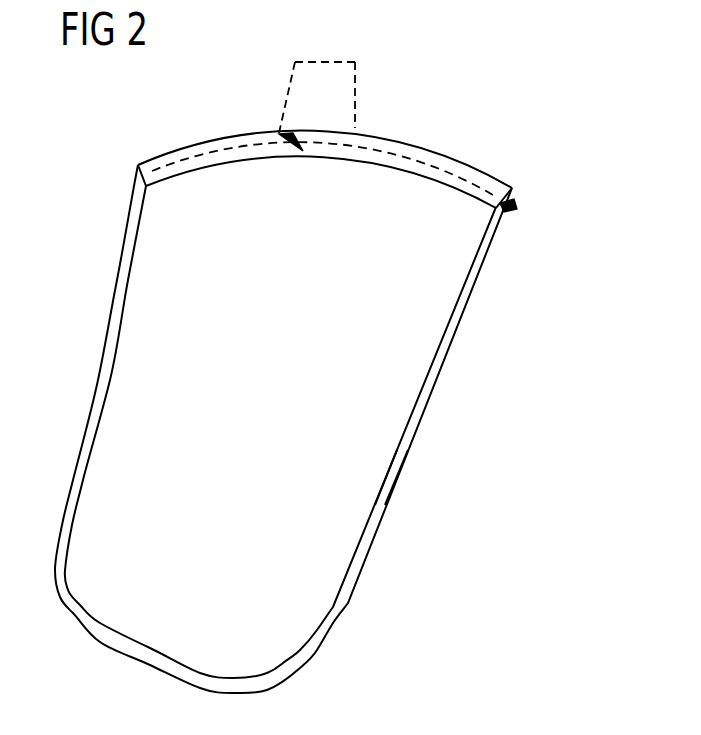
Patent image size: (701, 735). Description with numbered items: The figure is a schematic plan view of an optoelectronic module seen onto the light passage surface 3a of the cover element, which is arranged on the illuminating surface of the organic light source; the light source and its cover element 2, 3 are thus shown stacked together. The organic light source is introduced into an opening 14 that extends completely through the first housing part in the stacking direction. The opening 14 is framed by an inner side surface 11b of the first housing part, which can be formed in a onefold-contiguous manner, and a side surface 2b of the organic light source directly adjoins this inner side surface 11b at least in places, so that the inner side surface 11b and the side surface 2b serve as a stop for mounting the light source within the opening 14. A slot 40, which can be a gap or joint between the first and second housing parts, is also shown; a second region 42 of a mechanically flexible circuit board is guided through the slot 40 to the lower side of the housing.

The bucket body / receptacle wall 2, 3 is at (400, 413).
The light passage surface 3a is at (362, 512).
The side surface 2b is at (458, 192).
The inner side surface 11b is at (456, 160).
The opening 14 is at (517, 207).
The slot 40 is at (273, 143).
The second region 42 is at (355, 92).